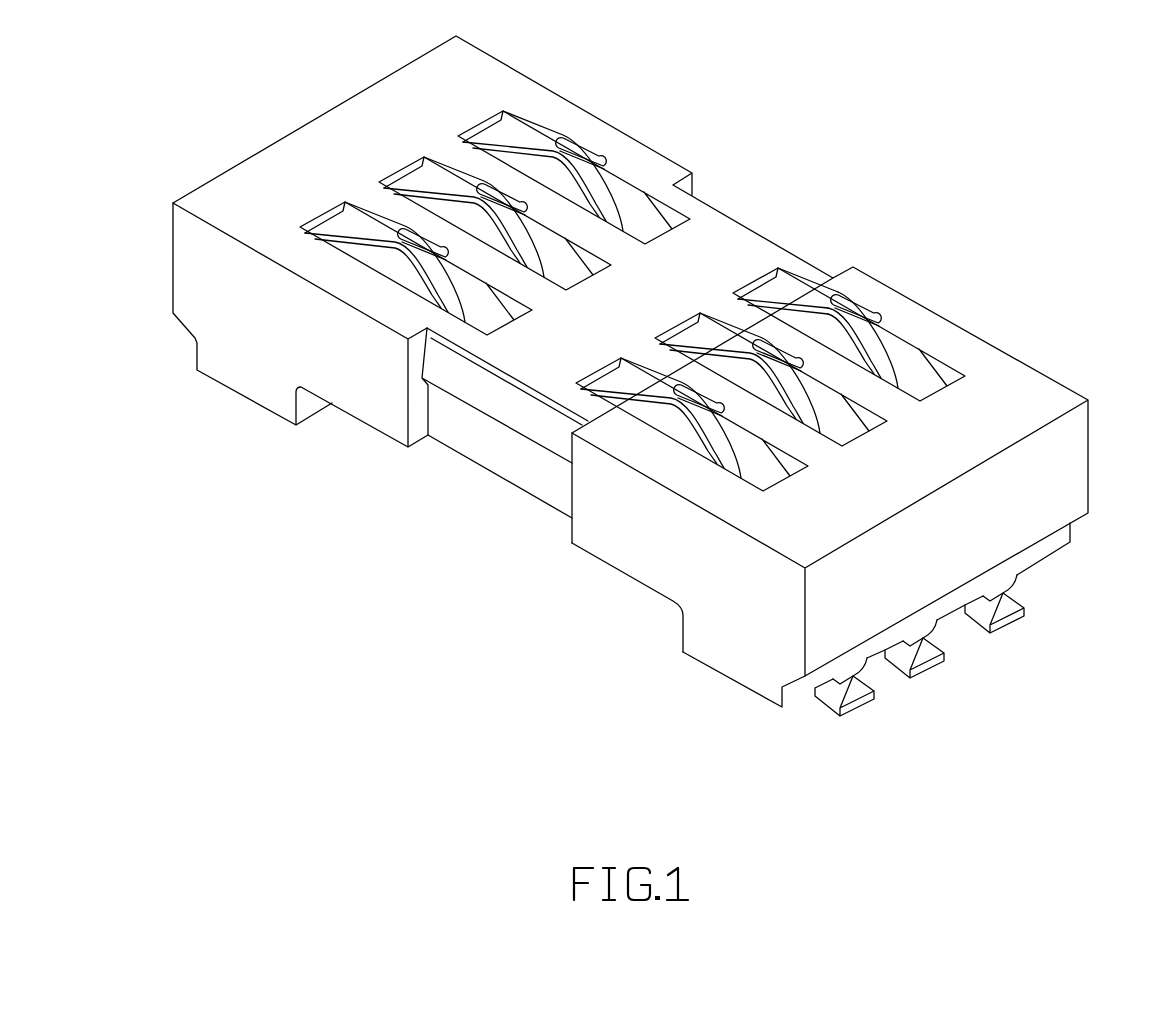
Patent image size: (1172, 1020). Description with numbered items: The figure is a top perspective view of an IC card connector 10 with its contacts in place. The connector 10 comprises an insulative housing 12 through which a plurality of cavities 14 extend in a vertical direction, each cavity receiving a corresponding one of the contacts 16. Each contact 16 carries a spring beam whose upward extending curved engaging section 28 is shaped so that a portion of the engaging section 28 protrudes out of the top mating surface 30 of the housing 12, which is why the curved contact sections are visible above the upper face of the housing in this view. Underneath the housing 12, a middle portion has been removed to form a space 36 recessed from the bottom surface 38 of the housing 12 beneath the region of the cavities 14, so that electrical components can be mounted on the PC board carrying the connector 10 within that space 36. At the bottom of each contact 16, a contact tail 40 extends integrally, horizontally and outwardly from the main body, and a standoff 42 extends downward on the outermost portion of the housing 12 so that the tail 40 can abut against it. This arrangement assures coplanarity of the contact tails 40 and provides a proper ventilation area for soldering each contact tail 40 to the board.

The IC card connector 10 is at (1003, 105).
The insulative housing 12 is at (1018, 385).
The cavities 14 is at (783, 280).
The contacts 16 is at (922, 336).
The engaging section 28 is at (882, 306).
The top mating surface 30 is at (641, 320).
The space 36 is at (598, 575).
The bottom surface 38 is at (723, 677).
The contact tail 40 is at (842, 710).
The standoff 42 is at (852, 668).